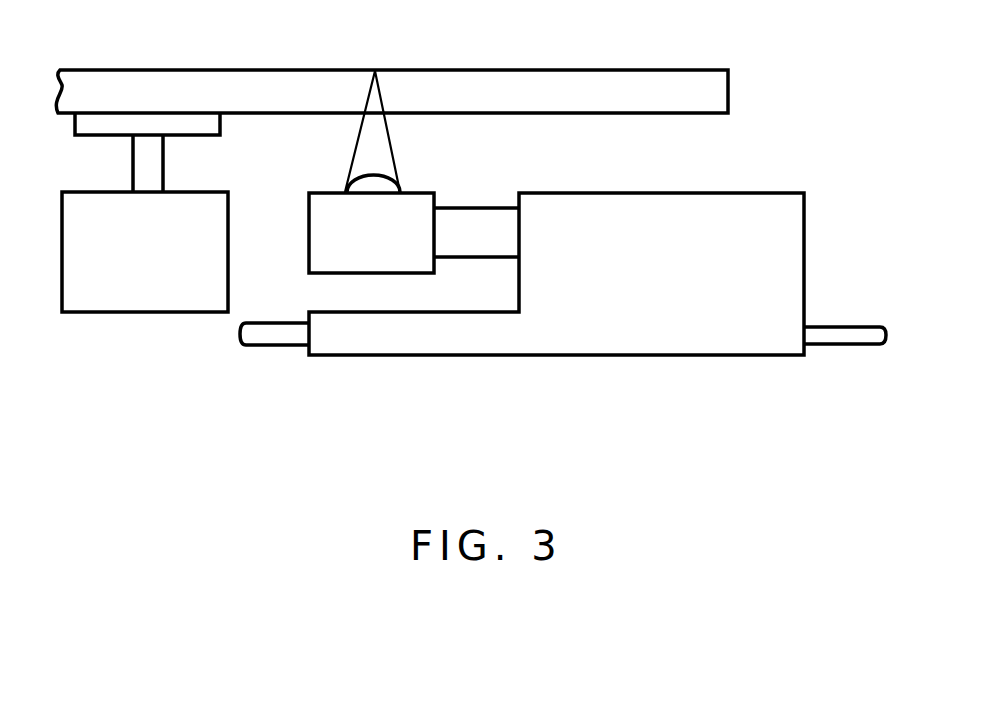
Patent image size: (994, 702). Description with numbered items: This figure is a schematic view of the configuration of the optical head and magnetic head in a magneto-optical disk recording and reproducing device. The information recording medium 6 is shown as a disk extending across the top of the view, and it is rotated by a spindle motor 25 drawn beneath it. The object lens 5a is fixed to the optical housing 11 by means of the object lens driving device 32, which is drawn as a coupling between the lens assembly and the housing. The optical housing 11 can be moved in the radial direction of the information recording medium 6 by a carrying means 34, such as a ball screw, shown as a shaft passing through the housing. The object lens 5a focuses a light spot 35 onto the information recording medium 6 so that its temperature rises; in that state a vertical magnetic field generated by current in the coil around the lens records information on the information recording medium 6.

The information recording medium 6 is at (560, 82).
The light beam 35 is at (383, 98).
The object lens 5a is at (383, 178).
The object lens driving device 32 is at (480, 222).
The optical housing 11 is at (793, 268).
The spindle motor 25 is at (153, 300).
The carrying means 34 is at (277, 340).